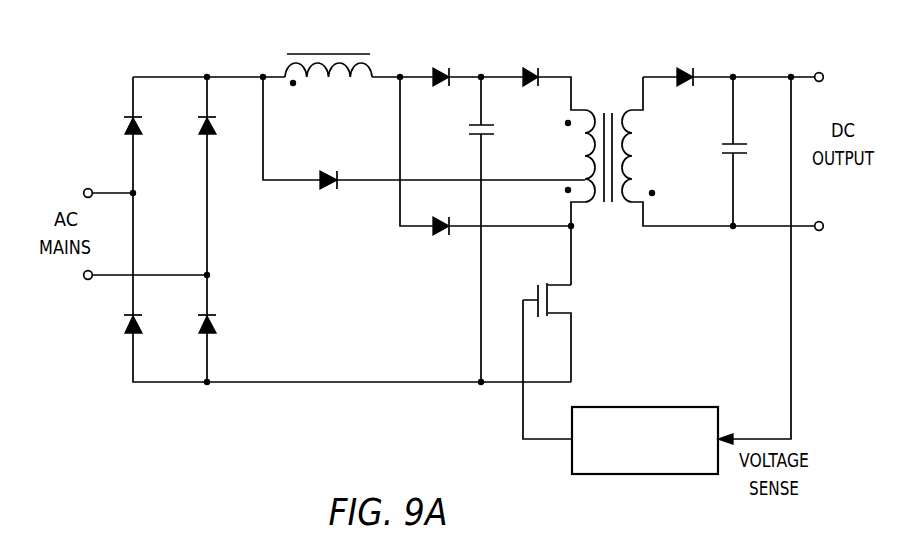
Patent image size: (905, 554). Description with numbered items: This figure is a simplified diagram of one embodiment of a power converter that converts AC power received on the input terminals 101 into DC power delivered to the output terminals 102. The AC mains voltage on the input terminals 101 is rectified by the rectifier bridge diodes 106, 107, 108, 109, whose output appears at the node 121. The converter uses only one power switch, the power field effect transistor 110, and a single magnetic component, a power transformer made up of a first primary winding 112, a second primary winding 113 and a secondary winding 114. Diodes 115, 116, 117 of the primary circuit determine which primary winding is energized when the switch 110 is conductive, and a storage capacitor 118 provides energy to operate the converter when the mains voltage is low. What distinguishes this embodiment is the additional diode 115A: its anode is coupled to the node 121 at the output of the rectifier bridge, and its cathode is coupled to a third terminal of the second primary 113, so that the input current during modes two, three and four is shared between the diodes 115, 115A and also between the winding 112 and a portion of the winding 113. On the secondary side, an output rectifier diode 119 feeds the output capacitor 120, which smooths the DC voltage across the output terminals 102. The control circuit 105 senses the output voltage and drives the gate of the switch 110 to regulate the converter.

The input terminals 101 is at (84, 190).
The output terminals 102 is at (823, 71).
The control circuit 105 is at (690, 475).
The rectifier bridge diode 106 is at (125, 128).
The rectifier bridge diode 107 is at (203, 140).
The rectifier bridge diode 108 is at (128, 337).
The rectifier bridge diode 109 is at (215, 323).
The power field effect transistor 110 is at (548, 300).
The first primary winding 112 is at (284, 73).
The second primary winding 113 is at (588, 110).
The secondary winding 114 is at (628, 207).
The diode 115 is at (441, 240).
The additional diode 115A is at (327, 195).
The diode 116 is at (527, 68).
The diode 117 is at (437, 68).
The storage capacitor 118 is at (496, 127).
The output rectifier diode 119 is at (680, 70).
The output capacitor 120 is at (724, 146).
The node 121 is at (207, 75).